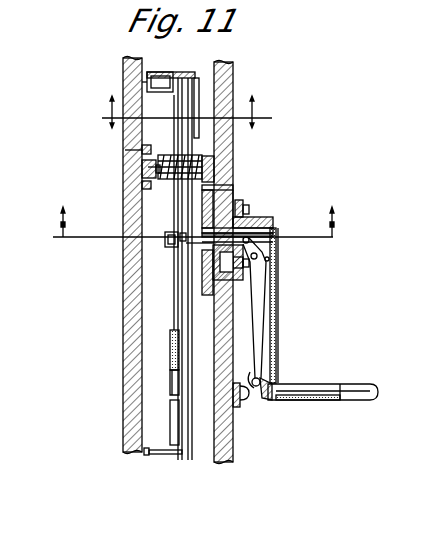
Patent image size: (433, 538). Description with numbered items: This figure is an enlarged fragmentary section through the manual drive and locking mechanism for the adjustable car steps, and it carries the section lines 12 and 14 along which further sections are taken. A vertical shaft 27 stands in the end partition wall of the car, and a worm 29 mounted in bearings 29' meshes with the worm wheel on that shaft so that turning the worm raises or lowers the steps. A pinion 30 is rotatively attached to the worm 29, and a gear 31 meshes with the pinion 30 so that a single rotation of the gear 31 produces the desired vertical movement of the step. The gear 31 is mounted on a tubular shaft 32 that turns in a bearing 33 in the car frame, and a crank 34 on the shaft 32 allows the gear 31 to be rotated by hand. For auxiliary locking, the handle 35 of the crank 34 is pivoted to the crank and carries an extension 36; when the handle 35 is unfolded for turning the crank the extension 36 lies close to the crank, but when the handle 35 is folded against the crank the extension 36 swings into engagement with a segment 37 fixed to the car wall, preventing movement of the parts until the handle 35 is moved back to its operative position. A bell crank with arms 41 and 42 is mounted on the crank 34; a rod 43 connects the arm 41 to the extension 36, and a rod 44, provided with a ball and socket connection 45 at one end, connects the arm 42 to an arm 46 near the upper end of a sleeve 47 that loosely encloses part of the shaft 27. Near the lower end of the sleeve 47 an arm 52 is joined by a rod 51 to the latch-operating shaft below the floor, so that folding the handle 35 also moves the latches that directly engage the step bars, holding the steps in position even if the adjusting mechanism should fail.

The pinion 30 is at (214, 150).
The section line 14— 14 is at (100, 122).
The section line 12— 12 is at (47, 250).
The bearings 29' is at (183, 164).
The worm 29 is at (146, 184).
The arm 46 is at (165, 238).
The ball and socket connection 45 is at (174, 243).
The rod 44 is at (203, 243).
The sleeve 47 is at (175, 297).
The vertical shaft 27 is at (172, 345).
The rod 51 is at (147, 456).
The arm 52 is at (158, 457).
The gear 31 is at (236, 200).
The bearing 33 is at (243, 215).
The shaft 32 is at (248, 225).
The bell crank arm 42 is at (268, 228).
The bell crank arm 41 is at (275, 242).
The rod 43 is at (272, 293).
The crank 34 is at (275, 327).
The extension 36 is at (252, 368).
The handle 35 is at (317, 388).
The segment 37 is at (233, 408).